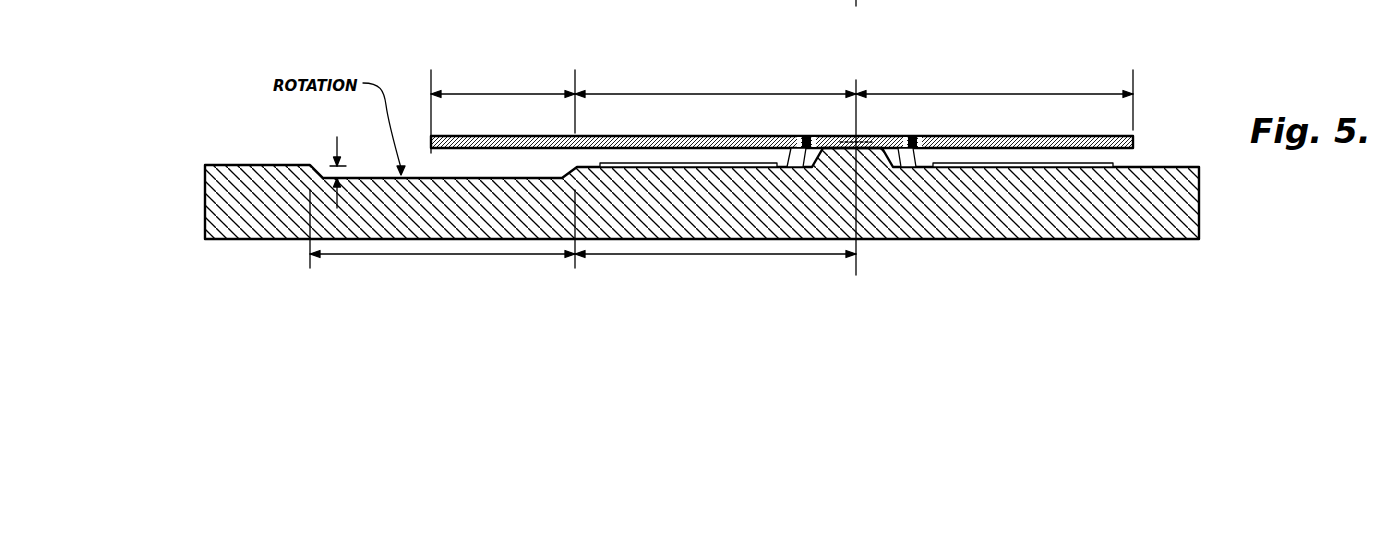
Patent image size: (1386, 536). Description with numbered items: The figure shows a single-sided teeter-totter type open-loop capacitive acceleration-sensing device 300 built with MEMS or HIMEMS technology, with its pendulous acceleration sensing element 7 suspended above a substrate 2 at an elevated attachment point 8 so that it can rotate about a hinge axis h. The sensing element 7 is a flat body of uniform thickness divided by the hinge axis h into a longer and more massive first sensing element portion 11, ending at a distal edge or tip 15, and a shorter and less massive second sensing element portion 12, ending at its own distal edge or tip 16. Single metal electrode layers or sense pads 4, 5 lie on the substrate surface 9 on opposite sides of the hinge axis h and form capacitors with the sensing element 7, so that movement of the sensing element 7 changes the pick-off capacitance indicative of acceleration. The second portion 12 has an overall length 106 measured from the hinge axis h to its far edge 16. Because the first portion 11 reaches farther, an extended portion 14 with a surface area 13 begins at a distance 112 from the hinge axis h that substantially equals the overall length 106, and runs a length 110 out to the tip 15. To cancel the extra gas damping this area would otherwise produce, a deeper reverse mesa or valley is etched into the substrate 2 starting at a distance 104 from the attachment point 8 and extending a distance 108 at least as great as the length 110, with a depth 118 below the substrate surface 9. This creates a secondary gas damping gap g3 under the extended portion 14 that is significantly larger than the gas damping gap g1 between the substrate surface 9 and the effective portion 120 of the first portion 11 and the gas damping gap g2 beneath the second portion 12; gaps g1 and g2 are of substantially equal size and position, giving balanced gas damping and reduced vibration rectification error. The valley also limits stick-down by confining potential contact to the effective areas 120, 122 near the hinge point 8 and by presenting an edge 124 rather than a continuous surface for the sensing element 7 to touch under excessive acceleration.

The substrate 2 is at (1200, 185).
The single-sided teeter-totter type open-loop capacitive acceleration-sensing device 300 is at (1212, 117).
The electrode element 4 is at (642, 162).
The electrode element 5 is at (1076, 163).
The pendulous acceleration sensing element 7 is at (902, 137).
The attachment point 8 is at (877, 177).
The substrate surface 9 is at (784, 137).
The hinge axis h is at (863, 136).
The first sensing element portion 11 is at (698, 136).
The second sensing element portion 12 is at (1027, 136).
The surface area 13 is at (516, 149).
The extended portion 14 is at (538, 136).
The distal edge or tip 15 is at (430, 140).
The distal edge or tip 16 is at (1135, 141).
The distance 104 is at (717, 257).
The overall length 106 is at (995, 93).
The distance 108 is at (431, 256).
The length 110 is at (501, 93).
The distance 112 is at (717, 93).
The depth 118 is at (337, 137).
The effective portion 120 is at (362, 172).
The effective area 122 is at (1115, 166).
The edge 124 is at (576, 169).
The gas damping gap g1 is at (740, 157).
The gas damping gap g2 is at (1005, 157).
The secondary gas damping gap g3 is at (453, 160).